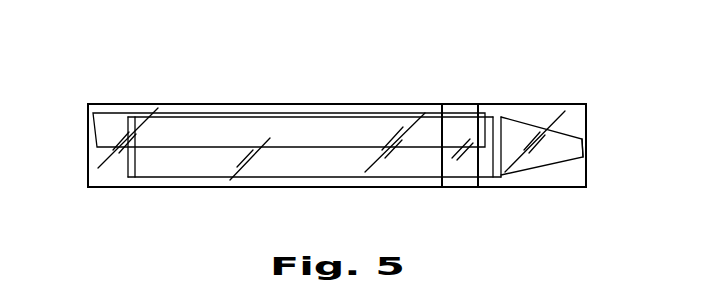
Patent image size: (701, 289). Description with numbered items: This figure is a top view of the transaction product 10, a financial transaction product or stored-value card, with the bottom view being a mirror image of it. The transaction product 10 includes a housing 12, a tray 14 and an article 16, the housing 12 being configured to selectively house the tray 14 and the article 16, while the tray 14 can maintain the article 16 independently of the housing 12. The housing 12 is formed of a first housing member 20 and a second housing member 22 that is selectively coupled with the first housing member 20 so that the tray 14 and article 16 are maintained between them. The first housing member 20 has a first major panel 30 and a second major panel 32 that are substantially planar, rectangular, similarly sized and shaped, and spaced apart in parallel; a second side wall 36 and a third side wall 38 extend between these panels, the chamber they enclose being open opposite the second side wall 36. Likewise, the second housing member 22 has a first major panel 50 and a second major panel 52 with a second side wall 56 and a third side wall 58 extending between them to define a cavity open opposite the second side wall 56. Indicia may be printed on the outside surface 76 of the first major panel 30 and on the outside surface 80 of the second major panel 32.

The transaction product 10 is at (300, 93).
The housing 12 is at (82, 163).
The tray 14 is at (116, 128).
The article 16 is at (543, 150).
The first housing member 20 is at (128, 178).
The second housing member 22 is at (577, 182).
The first major panel 30 is at (322, 187).
The second major panel 32 is at (308, 103).
The second side wall 36 is at (87, 123).
The third side wall 38 is at (115, 167).
The first major panel 50 is at (495, 187).
The second major panel 52 is at (544, 103).
The second side wall 56 is at (588, 123).
The third side wall 58 is at (576, 166).
The outside surface 76 is at (188, 187).
The outside surface 80 is at (213, 103).